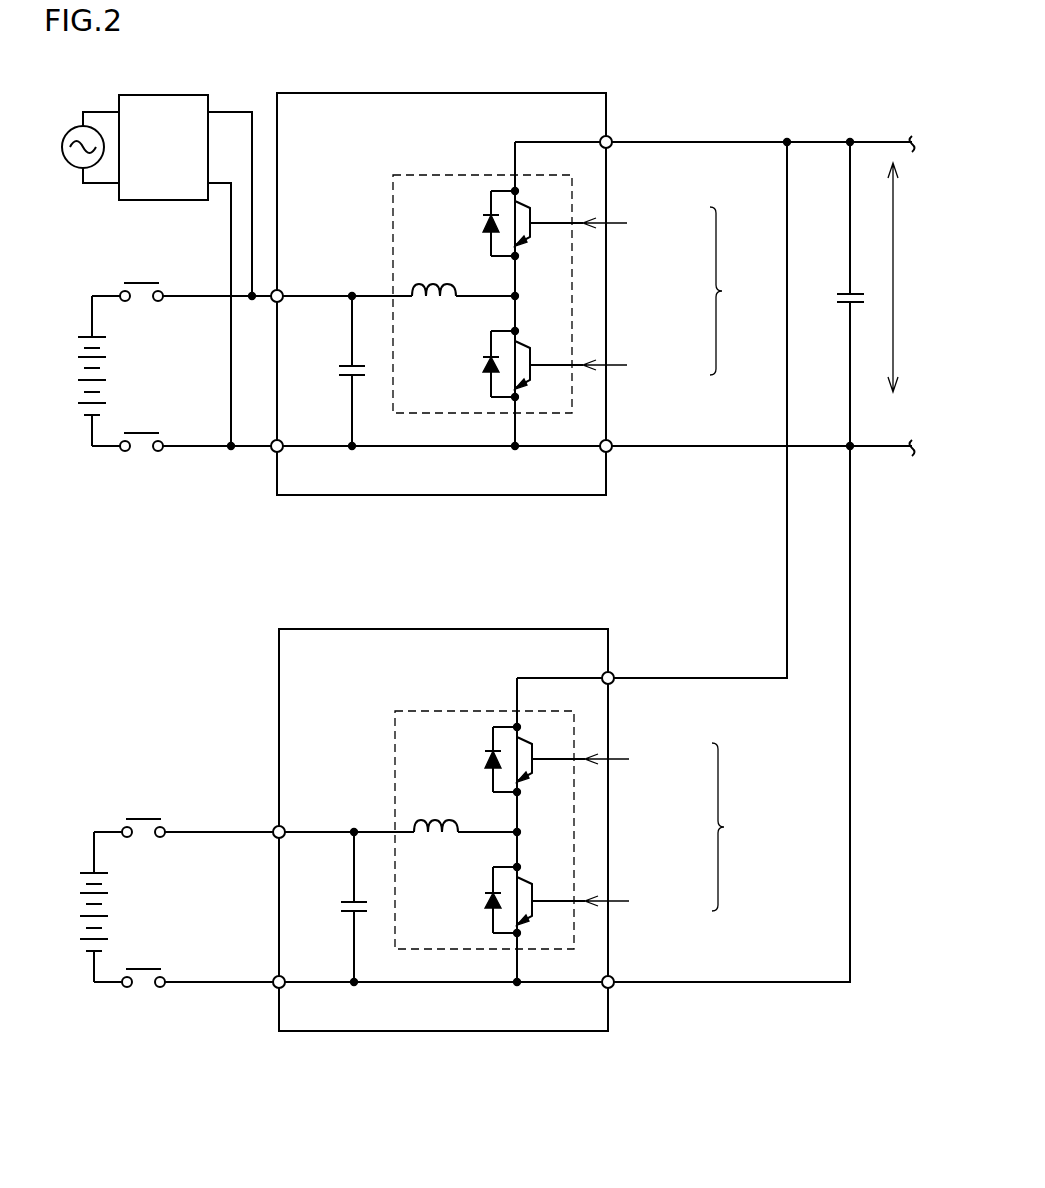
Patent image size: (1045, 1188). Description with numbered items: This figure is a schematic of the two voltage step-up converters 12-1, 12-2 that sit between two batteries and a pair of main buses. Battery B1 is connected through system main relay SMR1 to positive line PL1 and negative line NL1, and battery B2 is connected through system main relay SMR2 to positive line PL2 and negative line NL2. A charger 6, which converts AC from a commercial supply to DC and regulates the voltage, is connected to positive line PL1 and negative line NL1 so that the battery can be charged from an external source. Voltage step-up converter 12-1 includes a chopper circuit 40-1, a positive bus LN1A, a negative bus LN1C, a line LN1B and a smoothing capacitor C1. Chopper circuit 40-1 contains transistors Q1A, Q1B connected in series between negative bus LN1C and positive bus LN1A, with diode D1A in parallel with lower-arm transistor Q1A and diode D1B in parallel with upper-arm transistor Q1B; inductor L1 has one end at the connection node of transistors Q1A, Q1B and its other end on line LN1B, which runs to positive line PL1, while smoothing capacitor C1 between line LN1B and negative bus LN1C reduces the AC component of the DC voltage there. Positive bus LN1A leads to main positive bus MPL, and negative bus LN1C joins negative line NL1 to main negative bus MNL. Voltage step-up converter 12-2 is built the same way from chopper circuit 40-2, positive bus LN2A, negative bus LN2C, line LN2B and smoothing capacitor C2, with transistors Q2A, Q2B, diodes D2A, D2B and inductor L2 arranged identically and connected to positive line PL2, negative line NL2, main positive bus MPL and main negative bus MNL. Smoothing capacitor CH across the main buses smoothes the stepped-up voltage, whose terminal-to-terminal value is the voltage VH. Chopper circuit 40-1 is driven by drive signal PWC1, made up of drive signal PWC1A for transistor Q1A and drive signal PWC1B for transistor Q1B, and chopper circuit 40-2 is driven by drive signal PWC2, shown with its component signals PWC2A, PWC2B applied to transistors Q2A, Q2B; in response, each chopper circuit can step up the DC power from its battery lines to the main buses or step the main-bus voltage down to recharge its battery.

The charger 6 is at (197, 95).
The voltage step-up converter 12-1 is at (576, 93).
The voltage step-up converter 12-2 is at (458, 814).
The chopper circuit 40-1 is at (420, 175).
The chopper circuit 40-2 is at (490, 808).
The battery B1 is at (108, 352).
The battery B2 is at (119, 907).
The system main relay SMR1 is at (147, 272).
The system main relay SMR2 is at (133, 881).
The positive line PL1 is at (194, 293).
The negative line NL1 is at (194, 443).
The positive line PL2 is at (219, 813).
The negative line NL2 is at (219, 963).
The smoothing capacitor C1 is at (342, 366).
The smoothing capacitor C2 is at (336, 907).
The inductor L1 is at (434, 279).
The inductor L2 is at (436, 815).
The transistor Q1A is at (548, 362).
The transistor Q1B is at (548, 221).
The transistor Q2A is at (550, 898).
The transistor Q2B is at (550, 757).
The diode D1A is at (476, 362).
The diode D1B is at (476, 221).
The diode D2A is at (478, 898).
The diode D2B is at (478, 757).
The positive bus LN1A is at (557, 282).
The line LN1B is at (399, 283).
The negative bus LN1C is at (441, 436).
The positive bus LN2A is at (559, 818).
The line LN2B is at (401, 819).
The negative bus LN2C is at (443, 972).
The main positive bus MPL is at (894, 140).
The main negative bus MNL is at (894, 444).
The smoothing capacitor CH is at (842, 294).
The terminal-to-terminal voltage VH is at (911, 277).
The drive signal PWC1 is at (683, 292).
The drive signal PWC1A is at (643, 365).
The drive signal PWC1B is at (642, 223).
The drive signal PWC2 is at (685, 828).
The control signal for Q2A PWC2A is at (645, 901).
The control signal for Q2B PWC2B is at (644, 759).